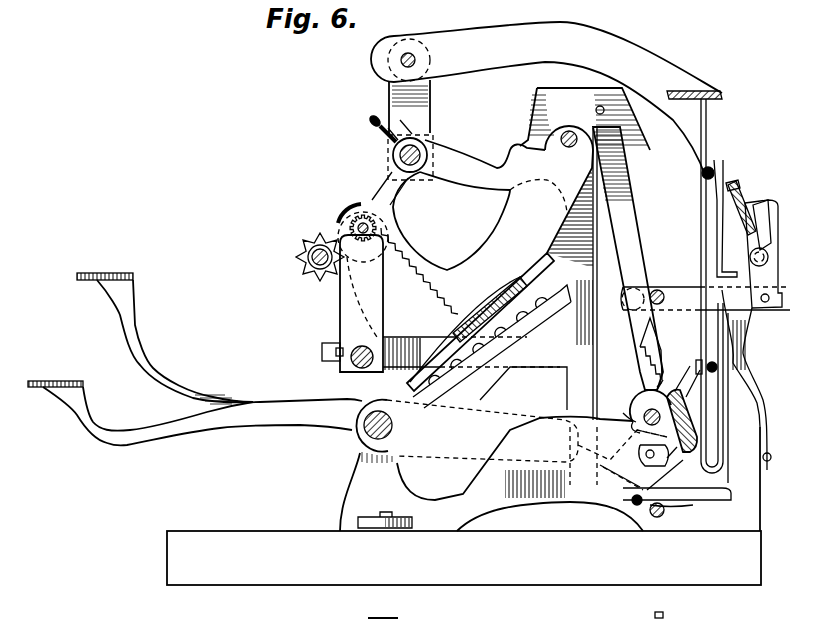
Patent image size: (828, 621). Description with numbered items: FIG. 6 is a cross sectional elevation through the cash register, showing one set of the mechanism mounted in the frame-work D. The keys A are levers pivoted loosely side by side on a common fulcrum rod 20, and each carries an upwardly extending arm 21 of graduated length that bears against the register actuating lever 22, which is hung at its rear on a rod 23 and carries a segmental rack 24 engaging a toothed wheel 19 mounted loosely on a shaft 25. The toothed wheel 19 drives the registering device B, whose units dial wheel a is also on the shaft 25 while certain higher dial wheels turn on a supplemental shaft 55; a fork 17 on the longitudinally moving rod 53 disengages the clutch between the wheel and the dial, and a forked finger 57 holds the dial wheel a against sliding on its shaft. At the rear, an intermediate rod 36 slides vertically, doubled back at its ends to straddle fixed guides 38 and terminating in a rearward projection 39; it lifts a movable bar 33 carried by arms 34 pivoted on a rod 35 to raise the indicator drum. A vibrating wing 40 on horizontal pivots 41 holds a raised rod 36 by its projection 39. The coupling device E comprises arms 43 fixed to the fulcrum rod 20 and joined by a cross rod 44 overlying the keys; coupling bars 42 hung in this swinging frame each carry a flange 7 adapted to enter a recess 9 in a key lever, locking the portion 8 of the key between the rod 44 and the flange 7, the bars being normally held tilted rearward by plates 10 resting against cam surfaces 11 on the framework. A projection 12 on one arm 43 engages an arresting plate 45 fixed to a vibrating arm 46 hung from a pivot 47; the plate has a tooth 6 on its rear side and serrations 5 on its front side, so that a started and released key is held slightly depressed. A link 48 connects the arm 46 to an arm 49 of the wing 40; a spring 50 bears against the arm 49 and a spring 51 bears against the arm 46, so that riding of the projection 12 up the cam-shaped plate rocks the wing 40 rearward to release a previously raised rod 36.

The serrations 5 is at (648, 368).
The serration or tooth 6 is at (661, 391).
The flange 7 is at (669, 456).
The portion of key lever 8 is at (648, 442).
The recess 9 is at (654, 455).
The plate 10 is at (693, 368).
The cam surface 11 is at (706, 363).
The pin or projection 12 is at (655, 615).
The fork 17 is at (383, 297).
The toothed wheel 19 is at (358, 212).
The fulcrum rod 20 is at (392, 432).
The upwardly extending arm 21 is at (501, 333).
The register actuating lever 22 is at (460, 335).
The rod 23 is at (568, 147).
The segmental rack 24 is at (419, 271).
The shaft 25 is at (366, 258).
The movable bar 33 is at (723, 96).
The arms 34 is at (546, 100).
The rod 35 is at (415, 60).
The intermediate rod 36 is at (708, 131).
The fixed guides 38 is at (702, 172).
The rearward projection 39 is at (733, 272).
The vibrating wing 40 is at (745, 190).
The horizontal pivots 41 is at (769, 256).
The coupling bar 42 is at (686, 452).
The arm 43 is at (625, 414).
The cross rod 44 is at (650, 407).
The arresting plate 45 is at (648, 349).
The vibrating arm 46 is at (628, 258).
The pivot 47 is at (600, 106).
The link 48 is at (676, 292).
The arm 49 is at (779, 278).
The spring 50 is at (752, 340).
The spring 51 is at (410, 150).
The clutch disengaging rod 53 is at (347, 349).
The supplemental shaft 55 is at (320, 257).
The forked finger 57 is at (368, 200).
The keys A is at (195, 359).
The registering device B is at (311, 205).
The frame-work D is at (461, 164).
The coupling device E is at (629, 410).
The units dial wheel a is at (345, 210).